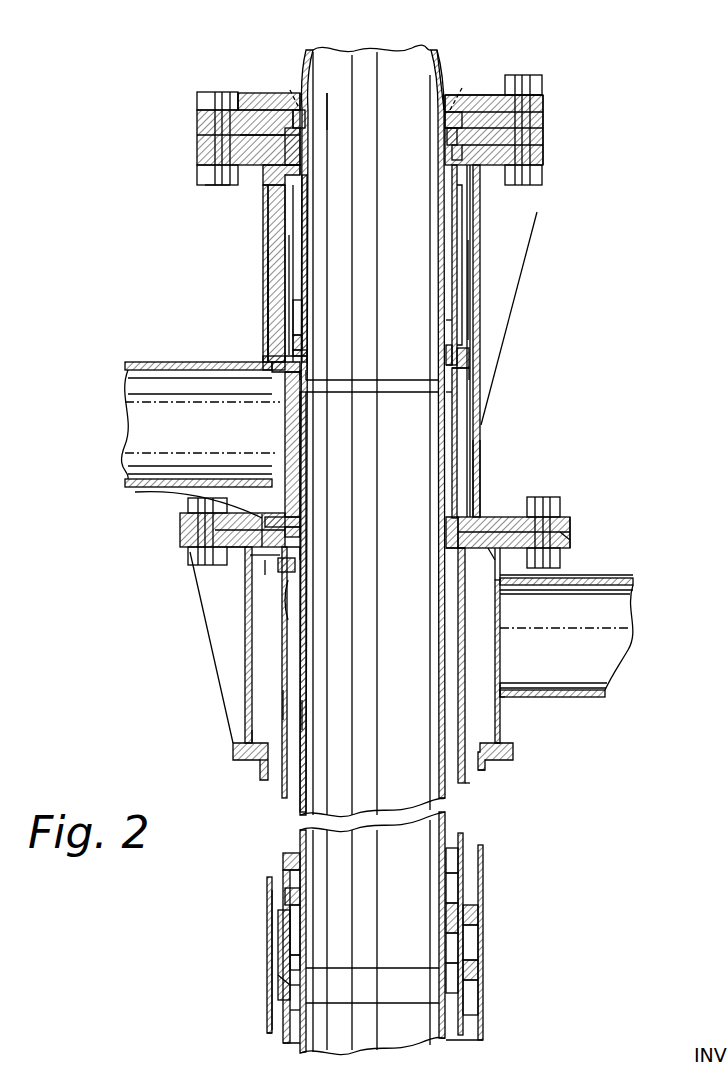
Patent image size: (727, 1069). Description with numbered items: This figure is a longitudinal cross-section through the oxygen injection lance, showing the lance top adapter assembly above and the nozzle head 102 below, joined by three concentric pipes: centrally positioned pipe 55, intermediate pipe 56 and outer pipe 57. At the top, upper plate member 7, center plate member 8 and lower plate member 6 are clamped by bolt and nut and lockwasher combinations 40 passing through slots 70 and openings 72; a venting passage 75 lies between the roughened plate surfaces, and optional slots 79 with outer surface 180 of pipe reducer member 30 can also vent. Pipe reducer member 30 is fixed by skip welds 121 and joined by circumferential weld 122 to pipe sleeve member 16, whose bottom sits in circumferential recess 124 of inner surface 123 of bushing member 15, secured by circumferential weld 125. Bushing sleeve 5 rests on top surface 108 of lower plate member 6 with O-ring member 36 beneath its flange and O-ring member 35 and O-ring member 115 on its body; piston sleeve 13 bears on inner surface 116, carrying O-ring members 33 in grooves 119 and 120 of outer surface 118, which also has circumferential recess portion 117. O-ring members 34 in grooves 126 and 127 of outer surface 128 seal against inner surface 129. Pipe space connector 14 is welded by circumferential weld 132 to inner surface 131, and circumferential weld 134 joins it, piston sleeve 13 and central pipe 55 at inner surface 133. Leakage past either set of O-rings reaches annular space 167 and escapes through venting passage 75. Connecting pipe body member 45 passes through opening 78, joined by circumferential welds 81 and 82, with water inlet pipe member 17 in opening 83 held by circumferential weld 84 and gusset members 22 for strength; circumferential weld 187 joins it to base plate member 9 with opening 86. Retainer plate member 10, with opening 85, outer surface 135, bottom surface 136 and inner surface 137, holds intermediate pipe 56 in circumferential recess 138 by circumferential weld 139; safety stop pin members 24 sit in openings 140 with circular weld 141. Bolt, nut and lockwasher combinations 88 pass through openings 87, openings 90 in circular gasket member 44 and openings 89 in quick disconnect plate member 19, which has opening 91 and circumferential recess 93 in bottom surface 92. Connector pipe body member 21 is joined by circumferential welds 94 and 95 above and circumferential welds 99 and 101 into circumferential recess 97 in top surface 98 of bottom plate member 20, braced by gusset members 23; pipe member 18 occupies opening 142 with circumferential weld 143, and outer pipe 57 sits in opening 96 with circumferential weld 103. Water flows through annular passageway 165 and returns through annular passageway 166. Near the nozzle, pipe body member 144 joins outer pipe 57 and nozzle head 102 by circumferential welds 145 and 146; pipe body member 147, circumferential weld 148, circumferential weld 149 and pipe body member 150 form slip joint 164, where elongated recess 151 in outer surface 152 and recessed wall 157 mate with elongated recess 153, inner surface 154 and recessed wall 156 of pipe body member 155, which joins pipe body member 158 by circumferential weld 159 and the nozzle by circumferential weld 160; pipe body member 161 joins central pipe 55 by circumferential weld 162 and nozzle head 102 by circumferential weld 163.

The bushing sleeve 5 is at (277, 306).
The lower plate member 6 is at (200, 160).
The upper plate member 7 is at (485, 95).
The center plate member 8 is at (200, 120).
The base plate member 9 is at (180, 527).
The retainer plate member 10 is at (266, 530).
The piston sleeve 13 is at (298, 255).
The pipe space connector 14 is at (306, 406).
The bushing member 15 is at (302, 337).
The pipe sleeve member 16 is at (310, 230).
The water inlet pipe member 17 is at (168, 420).
The pipe member 18 is at (590, 633).
The quick disconnect plate member 19 is at (243, 548).
The bottom plate member 20 is at (238, 760).
The connector pipe body member 21 is at (245, 655).
The gusset members 22 is at (515, 300).
The gusset members 23 is at (218, 690).
The safety stop pin members 24 is at (297, 570).
The pipe reducer member 30 is at (322, 80).
The O-ring members 33 is at (300, 140).
The O-ring members 34 is at (307, 358).
The O-ring member 35 is at (300, 167).
The O-ring member 36 is at (243, 149).
The bolt and nut and lockwasher combinations 40 is at (220, 92).
The circular gasket member 44 is at (188, 540).
The connecting pipe body member 45 is at (266, 268).
The centrally positioned pipe 55 is at (308, 475).
The intermediate pipe 56 is at (283, 702).
The outer pipe 57 is at (270, 921).
The slots 70 is at (245, 93).
The openings 72 is at (205, 172).
The venting passage 75 is at (295, 95).
The opening 78 is at (545, 153).
The slots 79 is at (290, 90).
The circumferential weld 81 is at (268, 162).
The circumferential weld 82 is at (480, 175).
The opening 83 is at (275, 492).
The circumferential weld 84 is at (266, 362).
The opening 85 is at (452, 520).
The opening 86 is at (485, 520).
The openings 87 is at (572, 520).
The bolt, nut and lockwasher combinations 88 is at (555, 500).
The openings 89 is at (572, 553).
The openings 90 is at (572, 541).
The opening 91 is at (273, 560).
The bottom surface 92 is at (560, 575).
The circumferential recess 93 is at (263, 550).
The circumferential weld 94 is at (500, 584).
The circumferential weld 95 is at (487, 562).
The opening 96 is at (258, 766).
The circumferential recess 97 is at (258, 745).
The top surface 98 is at (514, 750).
The circumferential weld 99 is at (497, 742).
The circumferential weld 101 is at (493, 745).
The nozzle head 102 is at (268, 1040).
The circumferential weld 103 is at (483, 760).
The top surface 108 is at (545, 133).
The O-ring member 115 is at (266, 340).
The inner surface 116 is at (462, 262).
The circumferential recess portion 117 is at (288, 292).
The outer surface 118 is at (286, 241).
The circumferential groove 119 is at (452, 148).
The circumferential groove 120 is at (458, 158).
The skip welds 121 is at (448, 95).
The circumferential weld 122 is at (305, 114).
The inner surface 123 is at (445, 348).
The circumferential recess 124 is at (448, 325).
The circumferential weld 125 is at (303, 312).
The groove 126 is at (470, 355).
The groove 127 is at (458, 376).
The outer surface 128 is at (305, 348).
The inner surface 129 is at (450, 365).
The inner surface 131 is at (450, 232).
The circumferential weld 132 is at (446, 395).
The inner surface 133 is at (450, 428).
The circumferential weld 134 is at (282, 406).
The outer surface 135 is at (135, 492).
The bottom surface 136 is at (466, 546).
The inner surface 137 is at (456, 526).
The circumferential recess 138 is at (300, 527).
The circumferential weld 139 is at (300, 552).
The openings 140 is at (290, 600).
The circular weld 141 is at (292, 620).
The opening 142 is at (502, 690).
The circumferential weld 143 is at (507, 699).
The pipe body member 144 is at (270, 1020).
The circumferential weld 145 is at (285, 995).
The circumferential weld 146 is at (483, 1022).
The pipe body member 147 is at (470, 870).
The circumferential weld 148 is at (283, 860).
The circumferential weld 149 is at (283, 885).
The pipe body member 150 is at (470, 895).
The elongated recess 151 is at (480, 916).
The outer surface 152 is at (285, 900).
The elongated recess 153 is at (480, 946).
The inner surface 154 is at (465, 960).
The pipe body member 155 is at (280, 948).
The recessed wall 156 is at (462, 930).
The recessed wall 157 is at (462, 905).
The pipe body member 158 is at (465, 988).
The circumferential weld 159 is at (280, 975).
The circumferential weld 160 is at (480, 1005).
The pipe body member 161 is at (300, 985).
The circumferential weld 162 is at (300, 960).
The circumferential weld 163 is at (300, 1013).
The slip joint 164 is at (292, 925).
The annular passageway 165 is at (304, 716).
The annular passageway 166 is at (468, 778).
The annular space 167 is at (292, 105).
The outer surface 180 is at (442, 60).
The circumferential weld 187 is at (264, 522).